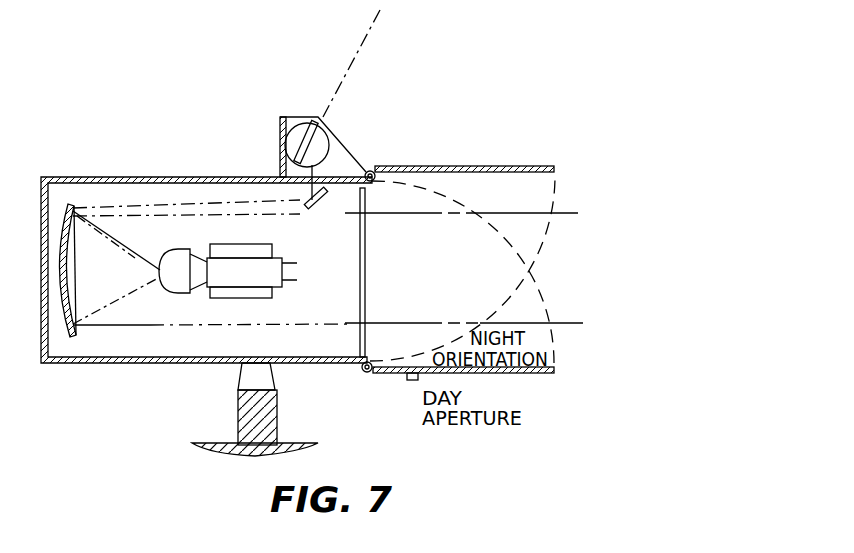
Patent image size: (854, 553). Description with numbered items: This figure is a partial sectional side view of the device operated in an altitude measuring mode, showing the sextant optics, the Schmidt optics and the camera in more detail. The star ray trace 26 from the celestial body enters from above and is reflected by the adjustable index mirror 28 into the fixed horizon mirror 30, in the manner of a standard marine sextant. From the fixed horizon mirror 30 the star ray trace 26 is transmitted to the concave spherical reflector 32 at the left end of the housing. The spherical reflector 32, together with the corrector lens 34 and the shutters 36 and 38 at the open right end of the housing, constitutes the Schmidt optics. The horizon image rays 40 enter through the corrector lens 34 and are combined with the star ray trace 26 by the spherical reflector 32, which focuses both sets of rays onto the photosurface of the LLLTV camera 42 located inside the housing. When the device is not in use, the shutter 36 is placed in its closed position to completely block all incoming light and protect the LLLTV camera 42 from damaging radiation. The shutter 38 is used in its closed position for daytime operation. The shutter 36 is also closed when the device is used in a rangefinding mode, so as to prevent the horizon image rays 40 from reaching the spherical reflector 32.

The star ray trace 26 is at (375, 22).
The adjustable index mirror 28 is at (282, 127).
The fixed horizon mirror 30 is at (331, 204).
The concave spherical reflector 32 is at (67, 338).
The corrector lens 34 is at (356, 360).
The shutter 36 is at (553, 166).
The shutter 38 is at (520, 373).
The horizon image rays 40 is at (578, 214).
The LLLTV camera 42 is at (251, 282).